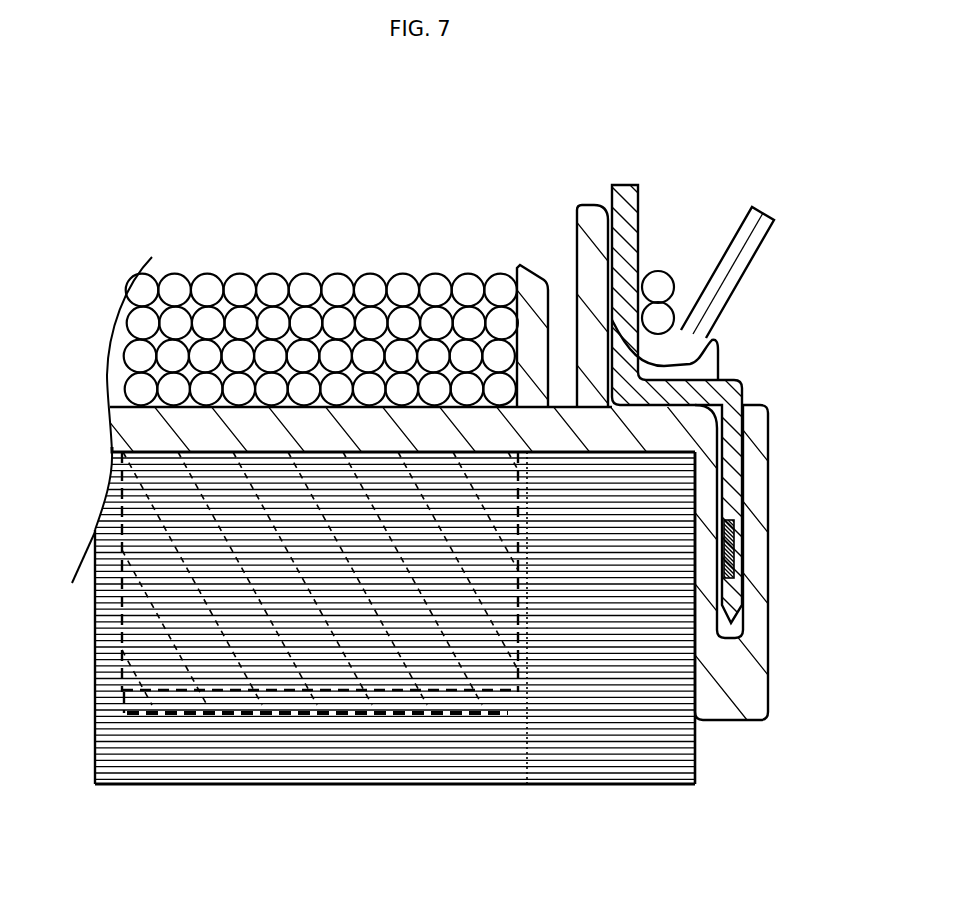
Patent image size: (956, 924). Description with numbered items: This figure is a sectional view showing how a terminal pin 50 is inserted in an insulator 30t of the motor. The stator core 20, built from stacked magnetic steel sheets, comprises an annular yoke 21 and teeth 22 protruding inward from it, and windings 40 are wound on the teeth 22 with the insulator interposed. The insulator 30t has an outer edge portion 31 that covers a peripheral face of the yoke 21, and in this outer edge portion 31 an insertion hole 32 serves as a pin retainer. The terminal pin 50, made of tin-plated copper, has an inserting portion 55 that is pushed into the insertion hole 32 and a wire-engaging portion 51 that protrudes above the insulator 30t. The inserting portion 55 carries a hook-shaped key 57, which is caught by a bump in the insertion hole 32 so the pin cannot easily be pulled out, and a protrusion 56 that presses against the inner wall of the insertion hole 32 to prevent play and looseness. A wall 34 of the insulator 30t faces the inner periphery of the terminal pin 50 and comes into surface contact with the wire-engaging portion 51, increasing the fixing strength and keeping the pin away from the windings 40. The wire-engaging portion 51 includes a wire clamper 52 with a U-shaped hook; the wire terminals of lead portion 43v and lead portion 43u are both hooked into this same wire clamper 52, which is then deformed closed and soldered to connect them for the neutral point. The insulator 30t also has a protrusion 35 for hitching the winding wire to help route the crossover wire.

The stator core 20 is at (463, 832).
The yoke 21 is at (585, 767).
The teeth 22 is at (477, 767).
The insulator 30t is at (137, 420).
The outer edge portion 31 is at (757, 693).
The insertion hole 32 is at (737, 634).
The wall 34 is at (588, 228).
The protrusion 35 is at (703, 360).
The windings 40 is at (207, 283).
The lead portion 43u is at (659, 283).
The lead portion 43v is at (667, 318).
The terminal pin 50 is at (612, 207).
The wire-engaging portion 51 is at (628, 190).
The wire clamper 52 is at (750, 262).
The inserting portion 55 is at (735, 468).
The protrusion 56 is at (742, 528).
The key 57 is at (735, 560).